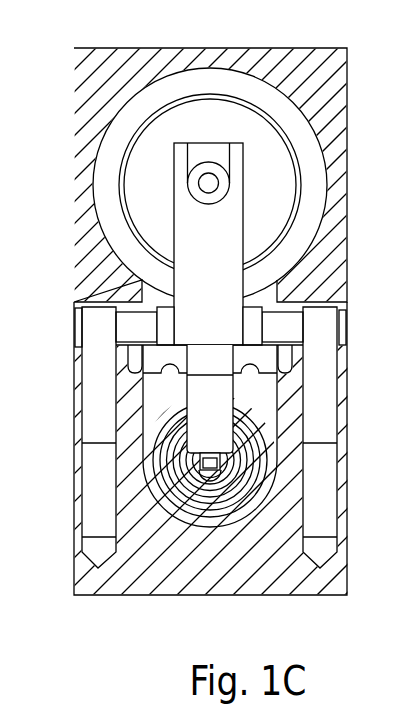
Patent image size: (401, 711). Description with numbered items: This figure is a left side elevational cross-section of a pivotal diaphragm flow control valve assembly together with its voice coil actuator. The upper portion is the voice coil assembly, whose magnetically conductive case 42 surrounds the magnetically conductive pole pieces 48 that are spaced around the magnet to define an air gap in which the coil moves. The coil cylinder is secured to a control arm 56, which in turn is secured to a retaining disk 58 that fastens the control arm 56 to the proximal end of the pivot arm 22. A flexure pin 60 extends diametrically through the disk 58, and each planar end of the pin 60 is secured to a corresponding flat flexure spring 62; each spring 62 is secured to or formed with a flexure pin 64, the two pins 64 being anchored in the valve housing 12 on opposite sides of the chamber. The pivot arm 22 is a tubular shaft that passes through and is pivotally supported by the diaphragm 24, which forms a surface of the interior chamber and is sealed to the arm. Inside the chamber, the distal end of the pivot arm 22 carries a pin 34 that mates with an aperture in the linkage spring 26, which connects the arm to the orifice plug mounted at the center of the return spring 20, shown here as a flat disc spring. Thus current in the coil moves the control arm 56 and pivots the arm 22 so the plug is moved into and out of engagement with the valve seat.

The valve housing 12 is at (77, 575).
The return spring 20 is at (183, 505).
The pivot arm 22 is at (198, 427).
The diaphragm 24 is at (253, 380).
The linkage spring 26 is at (194, 485).
The pin 34 is at (222, 473).
The magnetically conductive case 42 is at (337, 87).
The magnetically conductive pole pieces 48 is at (229, 83).
The control arm 56 is at (198, 252).
The retaining disk 58 is at (255, 333).
The flexure pin 60 is at (113, 322).
The flat flexure spring 62 is at (90, 380).
The flexure pin 64 is at (87, 473).